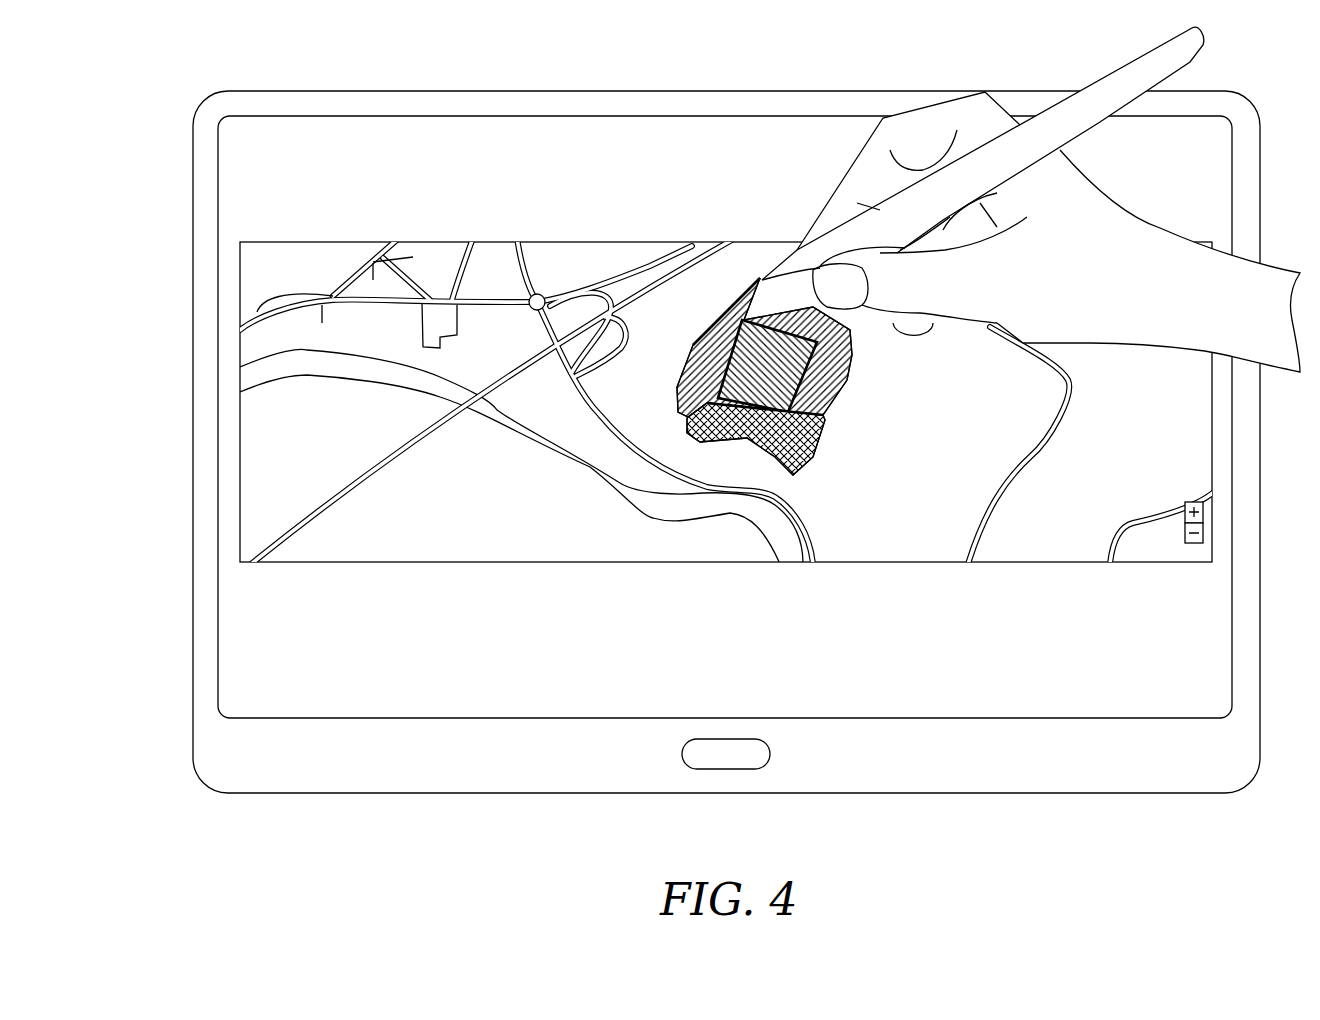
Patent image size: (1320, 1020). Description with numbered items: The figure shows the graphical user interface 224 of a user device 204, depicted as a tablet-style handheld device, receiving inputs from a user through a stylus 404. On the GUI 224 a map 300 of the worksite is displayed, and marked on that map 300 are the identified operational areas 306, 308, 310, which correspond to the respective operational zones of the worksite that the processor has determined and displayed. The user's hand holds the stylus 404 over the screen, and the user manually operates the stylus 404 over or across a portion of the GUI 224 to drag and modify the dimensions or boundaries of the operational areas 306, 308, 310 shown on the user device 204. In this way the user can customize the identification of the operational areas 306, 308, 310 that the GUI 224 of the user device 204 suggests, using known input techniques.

The user device 204 is at (193, 177).
The graphical user interface 224 is at (382, 173).
The map 300 is at (493, 243).
The operational area 306 is at (745, 390).
The operational area 308 is at (833, 390).
The operational area 310 is at (688, 428).
The stylus 404 is at (1120, 77).